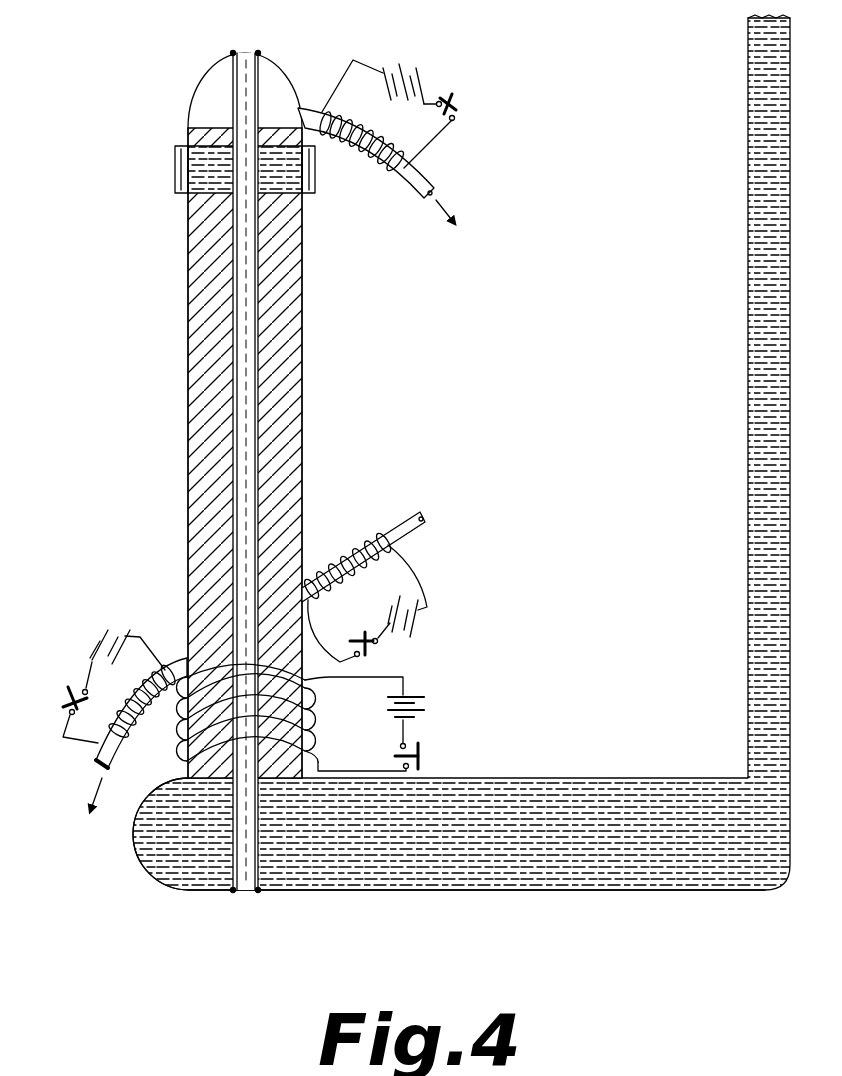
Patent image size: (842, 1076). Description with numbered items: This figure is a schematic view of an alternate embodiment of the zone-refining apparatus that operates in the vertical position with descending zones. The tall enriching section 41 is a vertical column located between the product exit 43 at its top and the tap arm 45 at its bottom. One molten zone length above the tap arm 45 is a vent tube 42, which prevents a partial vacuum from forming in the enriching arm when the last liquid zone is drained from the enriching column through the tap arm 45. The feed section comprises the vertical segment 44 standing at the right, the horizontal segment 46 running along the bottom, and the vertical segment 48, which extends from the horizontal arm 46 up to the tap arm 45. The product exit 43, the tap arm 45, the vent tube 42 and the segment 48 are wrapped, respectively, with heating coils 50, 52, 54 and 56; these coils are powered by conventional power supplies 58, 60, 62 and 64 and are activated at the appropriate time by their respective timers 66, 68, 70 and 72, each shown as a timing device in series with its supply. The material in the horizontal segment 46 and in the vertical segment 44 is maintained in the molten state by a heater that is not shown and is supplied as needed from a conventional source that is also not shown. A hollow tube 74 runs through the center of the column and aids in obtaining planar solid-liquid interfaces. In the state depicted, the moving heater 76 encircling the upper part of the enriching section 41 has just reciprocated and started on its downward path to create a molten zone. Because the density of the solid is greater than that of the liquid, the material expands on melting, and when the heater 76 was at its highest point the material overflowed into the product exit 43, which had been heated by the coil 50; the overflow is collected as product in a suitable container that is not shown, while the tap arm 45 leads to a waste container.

The enriching section 41 is at (302, 400).
The vent tube 42 is at (405, 530).
The product exit 43 is at (418, 192).
The vertical segment 44 is at (748, 412).
The tap arm 45 is at (162, 684).
The horizontal segment 46 is at (680, 740).
The vertical segment 48 is at (303, 763).
The heating coil 50 is at (440, 146).
The heating coil 52 is at (66, 745).
The heating coil 54 is at (420, 578).
The heating coil 56 is at (410, 680).
The power supply 58 is at (420, 80).
The power supply 60 is at (115, 634).
The power supply 62 is at (425, 618).
The power supply 64 is at (424, 704).
The timer 66 is at (466, 108).
The timer 68 is at (76, 689).
The timer 70 is at (365, 632).
The timer 72 is at (420, 749).
The hollow tube 74 is at (243, 347).
The moving heater 76 is at (177, 152).